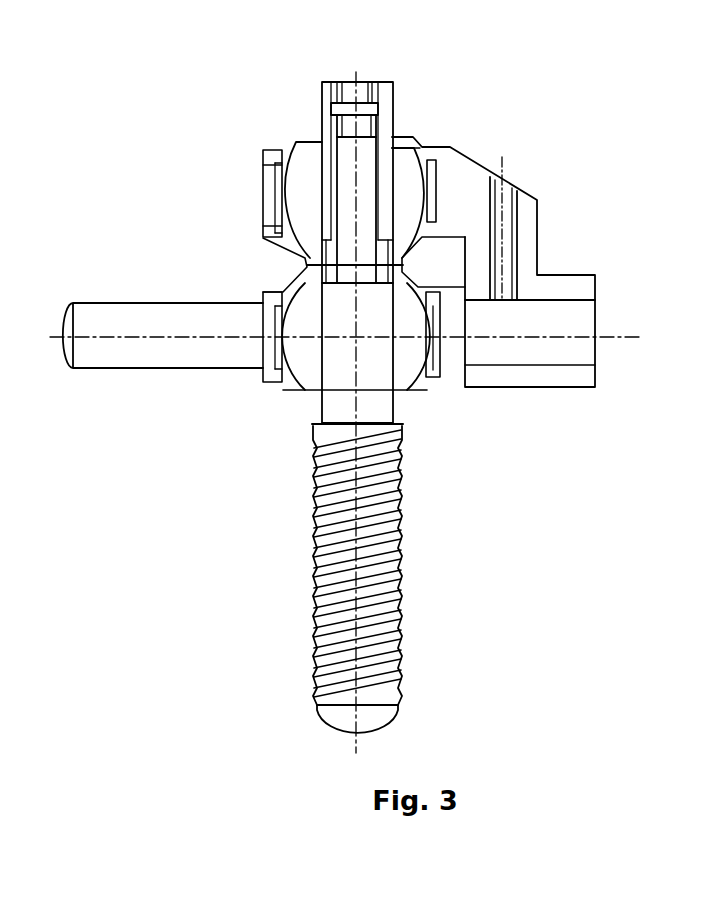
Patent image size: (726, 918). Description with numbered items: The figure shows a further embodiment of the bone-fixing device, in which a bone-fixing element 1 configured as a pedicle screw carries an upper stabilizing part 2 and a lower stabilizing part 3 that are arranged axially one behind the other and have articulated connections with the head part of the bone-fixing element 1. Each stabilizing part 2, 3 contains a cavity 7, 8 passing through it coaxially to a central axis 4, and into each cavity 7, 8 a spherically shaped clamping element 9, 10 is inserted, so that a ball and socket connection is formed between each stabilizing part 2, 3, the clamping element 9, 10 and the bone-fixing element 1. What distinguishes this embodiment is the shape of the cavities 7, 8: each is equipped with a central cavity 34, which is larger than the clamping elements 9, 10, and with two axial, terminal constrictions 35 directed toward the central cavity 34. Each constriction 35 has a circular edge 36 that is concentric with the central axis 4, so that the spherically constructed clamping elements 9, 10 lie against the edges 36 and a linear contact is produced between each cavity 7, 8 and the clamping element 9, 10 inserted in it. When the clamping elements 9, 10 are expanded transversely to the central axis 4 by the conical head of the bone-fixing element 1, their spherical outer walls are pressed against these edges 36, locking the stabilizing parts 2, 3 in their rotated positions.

The bone-fixing element 1 is at (423, 485).
The upper stabilizing part 2 is at (440, 167).
The lower stabilizing part 3 is at (252, 320).
The central axis 4 is at (373, 555).
The spherical cavity 7 is at (268, 173).
The spherical cavity 8 is at (273, 330).
The clamping element 9 is at (302, 177).
The clamping element 10 is at (303, 345).
The central cavity 34 is at (279, 221).
The axial terminal constriction 35 is at (280, 152).
The circular edge 36 is at (278, 170).